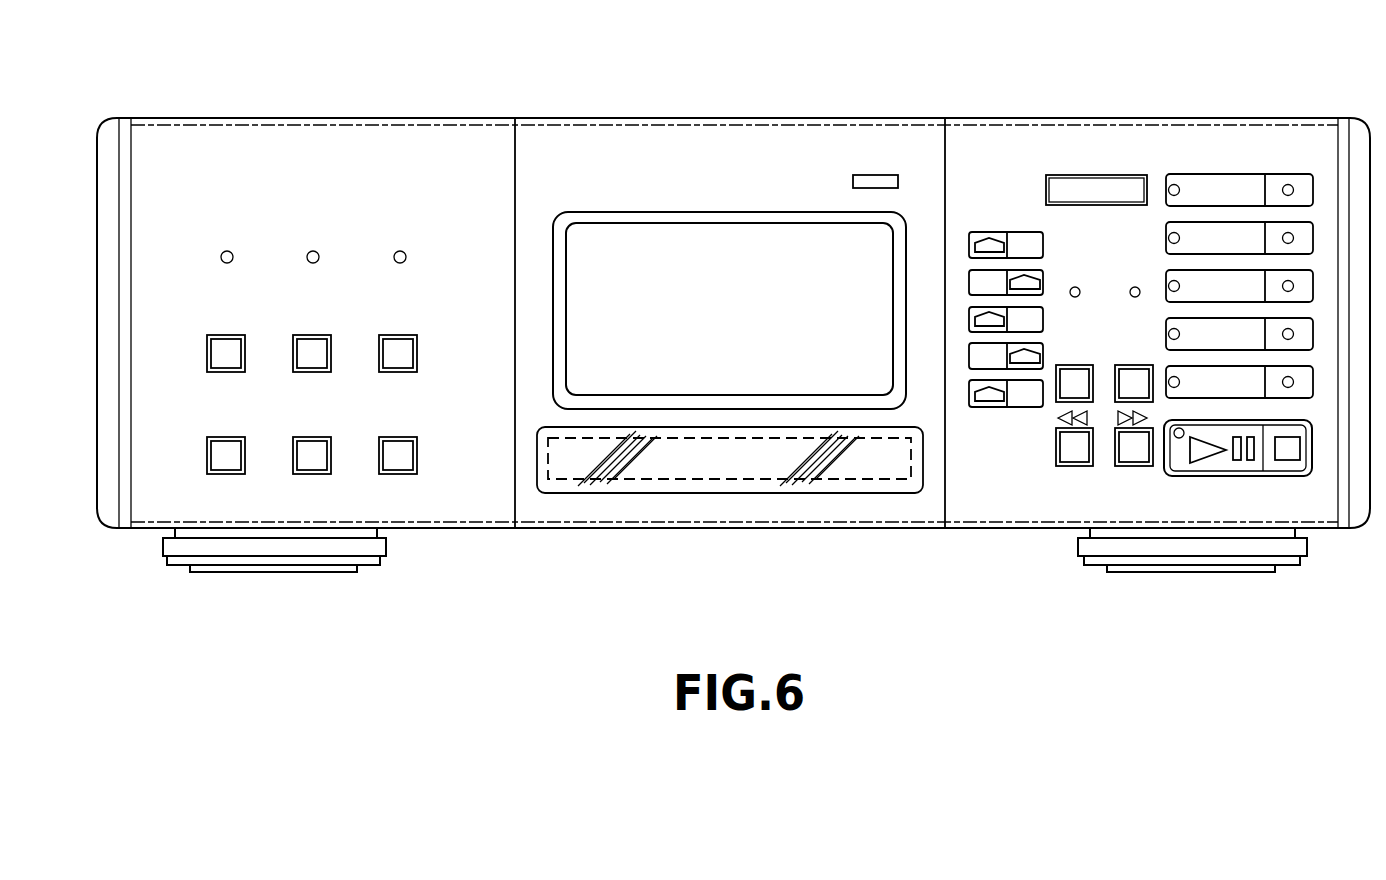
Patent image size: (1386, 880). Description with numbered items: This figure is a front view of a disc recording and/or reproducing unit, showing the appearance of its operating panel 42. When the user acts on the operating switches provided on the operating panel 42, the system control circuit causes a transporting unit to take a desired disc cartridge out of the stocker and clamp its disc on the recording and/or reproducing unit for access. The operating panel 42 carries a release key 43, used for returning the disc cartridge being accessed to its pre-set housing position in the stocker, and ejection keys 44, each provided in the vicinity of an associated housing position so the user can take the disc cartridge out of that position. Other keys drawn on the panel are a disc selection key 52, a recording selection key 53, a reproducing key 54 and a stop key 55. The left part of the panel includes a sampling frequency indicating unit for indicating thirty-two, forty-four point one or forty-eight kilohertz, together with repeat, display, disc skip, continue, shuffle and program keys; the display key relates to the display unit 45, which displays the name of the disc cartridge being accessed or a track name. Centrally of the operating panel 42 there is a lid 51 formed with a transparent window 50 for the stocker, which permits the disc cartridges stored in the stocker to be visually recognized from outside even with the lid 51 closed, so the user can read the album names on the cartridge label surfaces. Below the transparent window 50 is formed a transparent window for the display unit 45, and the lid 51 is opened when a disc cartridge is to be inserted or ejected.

The operating panel 42 is at (397, 124).
The release key 43 is at (1104, 172).
The ejection key 44 is at (1000, 418).
The display unit 45 is at (763, 460).
The transparent window 50 is at (692, 227).
The lid 51 is at (815, 217).
The disc selection key 52 is at (1224, 170).
The recording selection key 53 is at (1288, 172).
The reproducing key 54 is at (1200, 476).
The stop key 55 is at (1278, 476).